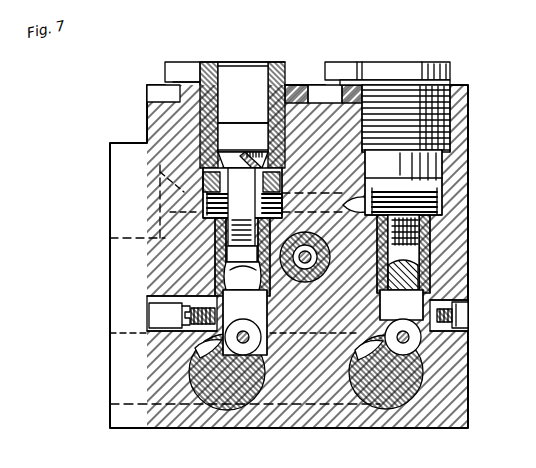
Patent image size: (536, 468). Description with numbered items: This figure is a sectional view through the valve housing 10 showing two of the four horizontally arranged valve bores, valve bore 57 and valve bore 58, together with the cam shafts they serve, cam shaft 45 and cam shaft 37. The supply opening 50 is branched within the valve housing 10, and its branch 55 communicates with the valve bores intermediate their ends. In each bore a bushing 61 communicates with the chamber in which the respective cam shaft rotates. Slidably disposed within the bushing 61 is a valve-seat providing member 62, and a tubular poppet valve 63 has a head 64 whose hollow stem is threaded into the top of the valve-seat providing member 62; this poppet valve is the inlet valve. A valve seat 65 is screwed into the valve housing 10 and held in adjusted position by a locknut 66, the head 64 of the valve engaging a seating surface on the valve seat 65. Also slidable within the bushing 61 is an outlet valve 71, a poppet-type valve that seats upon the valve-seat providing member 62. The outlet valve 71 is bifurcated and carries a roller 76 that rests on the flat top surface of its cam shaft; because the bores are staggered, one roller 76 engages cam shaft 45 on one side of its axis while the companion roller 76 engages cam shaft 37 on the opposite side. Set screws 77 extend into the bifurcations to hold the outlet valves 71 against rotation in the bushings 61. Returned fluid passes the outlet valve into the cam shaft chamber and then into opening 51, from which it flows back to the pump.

The valve housing 10 is at (157, 112).
The cam shaft 37 is at (378, 386).
The cam shaft 45 is at (243, 385).
The opening 50 is at (160, 168).
The opening 51 is at (289, 406).
The branch 55 is at (206, 181).
The valve bore 57 is at (210, 173).
The valve bore 58 is at (437, 195).
The bushing 61 is at (216, 265).
The valve-seat providing member 62 is at (419, 259).
The tubular poppet valve 63 is at (236, 197).
The head 64 is at (229, 150).
The valve seat 65 is at (224, 44).
The locknut 66 is at (297, 85).
The outlet valve 71 is at (222, 292).
The roller 76 is at (412, 345).
The set screw 77 is at (149, 321).